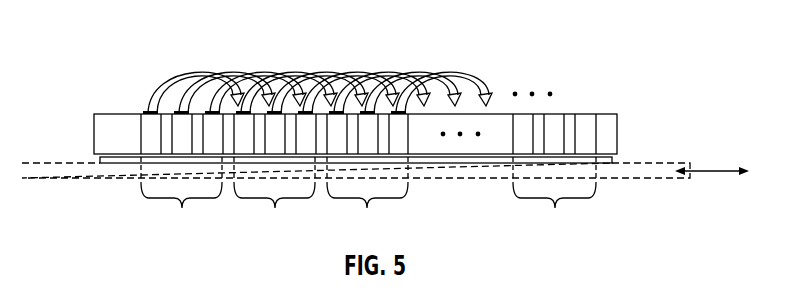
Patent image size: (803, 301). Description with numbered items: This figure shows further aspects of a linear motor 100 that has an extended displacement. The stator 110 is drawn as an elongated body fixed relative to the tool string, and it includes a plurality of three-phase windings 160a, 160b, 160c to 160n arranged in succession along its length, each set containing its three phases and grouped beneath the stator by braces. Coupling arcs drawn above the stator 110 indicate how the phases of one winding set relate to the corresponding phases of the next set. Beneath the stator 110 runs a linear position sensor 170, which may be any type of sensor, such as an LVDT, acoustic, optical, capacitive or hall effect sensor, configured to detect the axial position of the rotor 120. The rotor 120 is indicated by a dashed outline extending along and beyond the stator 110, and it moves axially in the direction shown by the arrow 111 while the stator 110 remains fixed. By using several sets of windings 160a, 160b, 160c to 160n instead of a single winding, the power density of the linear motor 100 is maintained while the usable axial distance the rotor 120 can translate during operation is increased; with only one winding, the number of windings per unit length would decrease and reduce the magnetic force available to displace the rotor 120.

The linear motor 100 is at (93, 49).
The stator 110 is at (144, 112).
The arrow 111 is at (711, 171).
The rotor 120 is at (63, 161).
The three-phase winding 160a is at (182, 176).
The three-phase winding 160b is at (275, 176).
The three-phase winding 160c is at (367, 176).
The three-phase winding 160n is at (554, 176).
The linear position sensor 170 is at (609, 163).